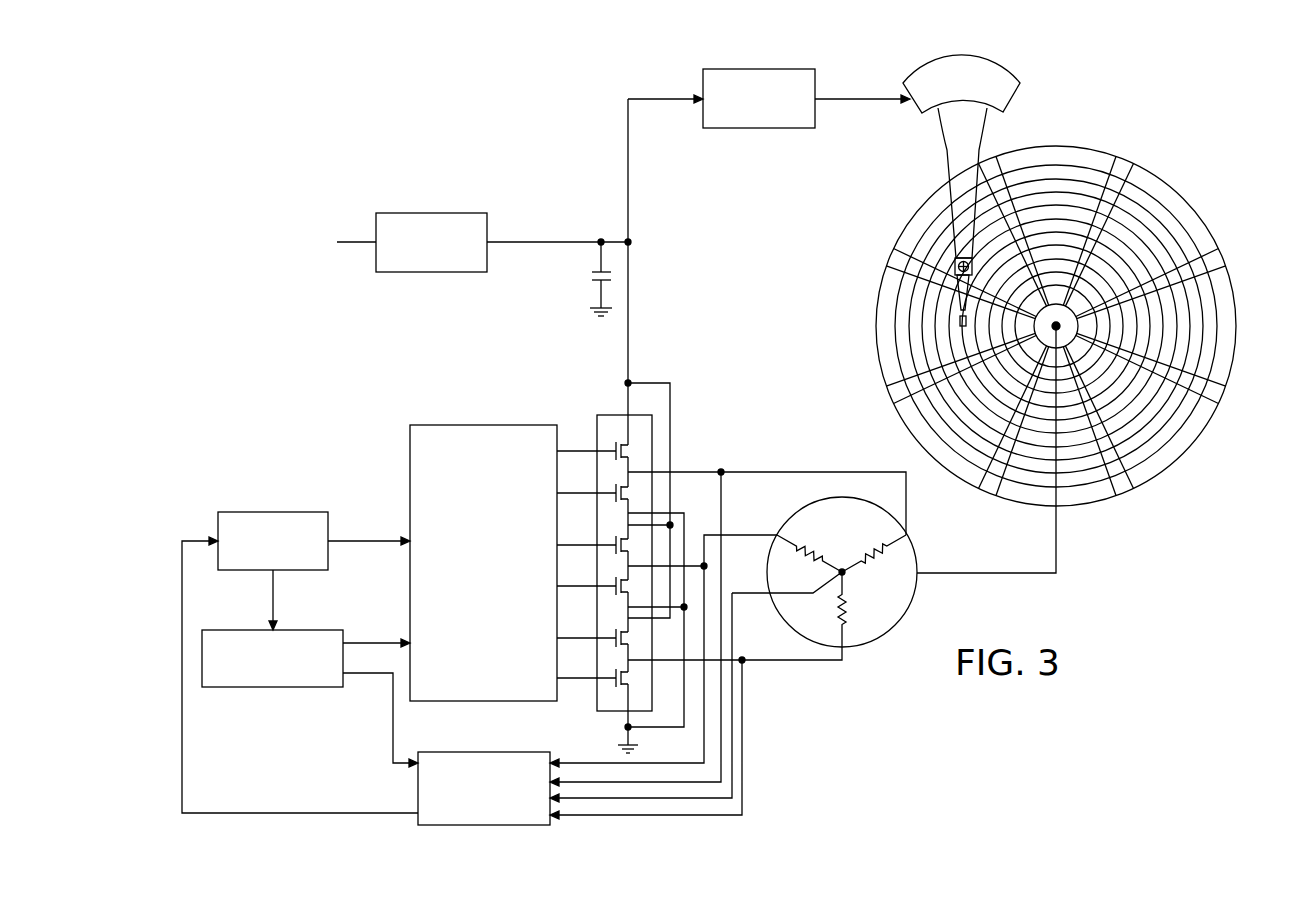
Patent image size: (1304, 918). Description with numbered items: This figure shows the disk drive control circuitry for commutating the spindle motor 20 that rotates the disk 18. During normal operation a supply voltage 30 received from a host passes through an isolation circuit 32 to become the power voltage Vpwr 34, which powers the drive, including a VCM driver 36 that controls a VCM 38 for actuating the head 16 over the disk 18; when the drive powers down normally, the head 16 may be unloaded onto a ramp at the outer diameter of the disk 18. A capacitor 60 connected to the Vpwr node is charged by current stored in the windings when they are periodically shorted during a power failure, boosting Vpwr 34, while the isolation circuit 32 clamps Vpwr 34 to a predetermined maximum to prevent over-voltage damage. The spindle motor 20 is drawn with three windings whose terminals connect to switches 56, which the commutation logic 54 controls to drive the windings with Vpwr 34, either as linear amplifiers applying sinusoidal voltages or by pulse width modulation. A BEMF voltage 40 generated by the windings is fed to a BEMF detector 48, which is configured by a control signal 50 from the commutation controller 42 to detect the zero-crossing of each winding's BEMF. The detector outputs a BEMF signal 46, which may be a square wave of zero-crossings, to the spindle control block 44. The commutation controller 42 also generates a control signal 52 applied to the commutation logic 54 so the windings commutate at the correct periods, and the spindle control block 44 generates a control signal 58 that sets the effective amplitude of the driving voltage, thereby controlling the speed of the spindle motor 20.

The head 16 is at (950, 325).
The disk 18 is at (1184, 183).
The spindle motor 20 is at (917, 595).
The supply voltage 30 is at (354, 242).
The isolation circuit 32 is at (430, 213).
The power voltage Vpwr 34 is at (536, 242).
The VCM driver 36 is at (756, 129).
The VCM 38 is at (1017, 97).
The BEMF voltage 40 is at (584, 757).
The commutation controller 42 is at (272, 687).
The spindle control block 44 is at (309, 570).
The BEMF signal 46 is at (299, 813).
The BEMF detector 48 is at (485, 752).
The control signal 50 is at (393, 718).
The control signal 52 is at (370, 643).
The commutation logic 54 is at (483, 425).
The switches 56 is at (613, 414).
The control signal 58 is at (361, 541).
The capacitor 60 is at (583, 283).